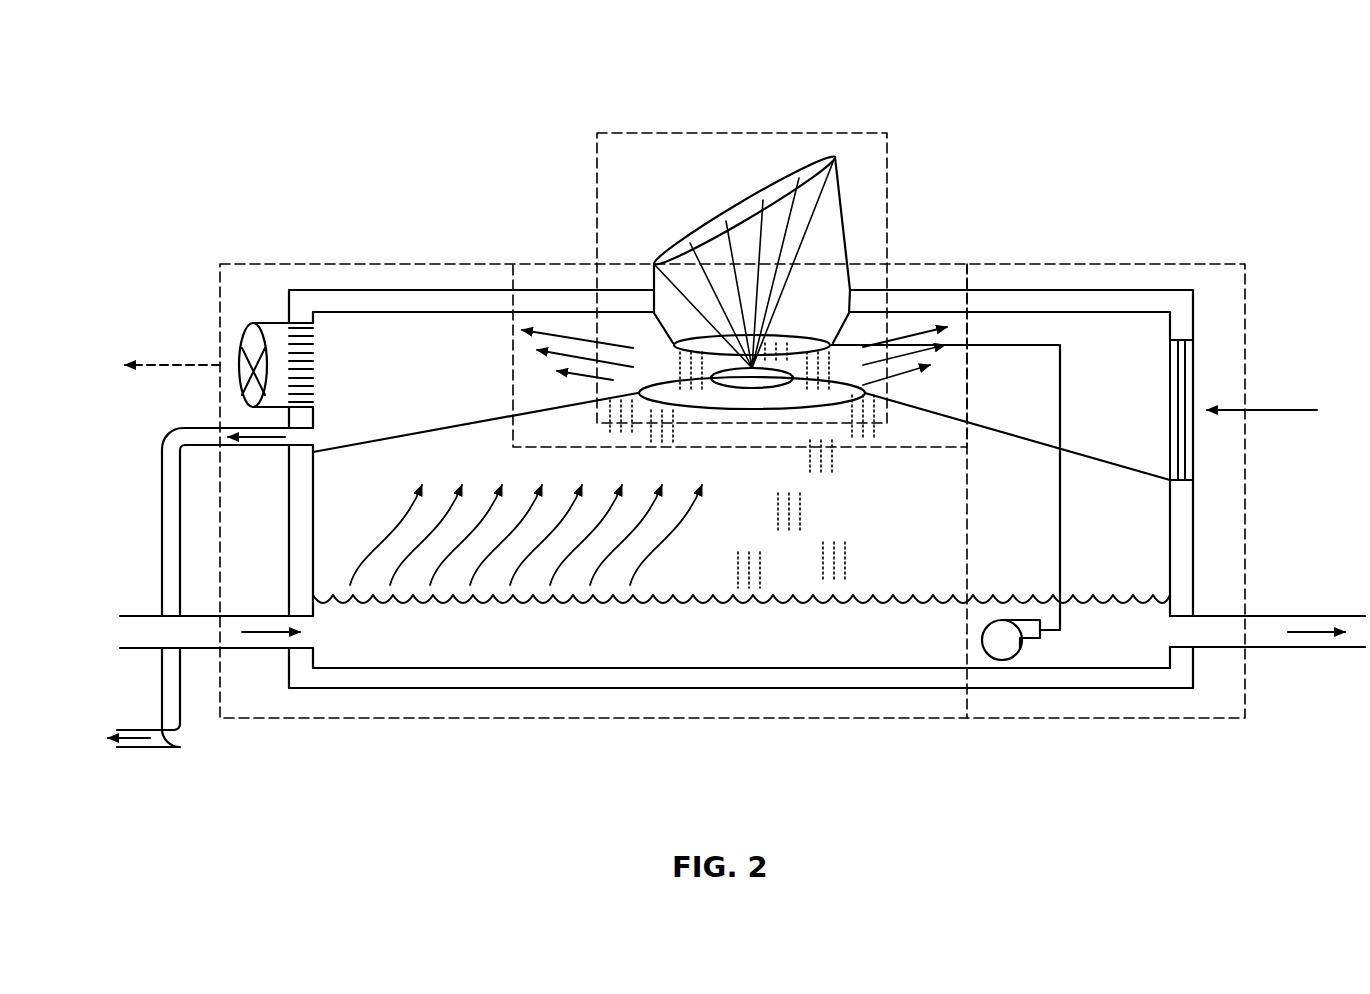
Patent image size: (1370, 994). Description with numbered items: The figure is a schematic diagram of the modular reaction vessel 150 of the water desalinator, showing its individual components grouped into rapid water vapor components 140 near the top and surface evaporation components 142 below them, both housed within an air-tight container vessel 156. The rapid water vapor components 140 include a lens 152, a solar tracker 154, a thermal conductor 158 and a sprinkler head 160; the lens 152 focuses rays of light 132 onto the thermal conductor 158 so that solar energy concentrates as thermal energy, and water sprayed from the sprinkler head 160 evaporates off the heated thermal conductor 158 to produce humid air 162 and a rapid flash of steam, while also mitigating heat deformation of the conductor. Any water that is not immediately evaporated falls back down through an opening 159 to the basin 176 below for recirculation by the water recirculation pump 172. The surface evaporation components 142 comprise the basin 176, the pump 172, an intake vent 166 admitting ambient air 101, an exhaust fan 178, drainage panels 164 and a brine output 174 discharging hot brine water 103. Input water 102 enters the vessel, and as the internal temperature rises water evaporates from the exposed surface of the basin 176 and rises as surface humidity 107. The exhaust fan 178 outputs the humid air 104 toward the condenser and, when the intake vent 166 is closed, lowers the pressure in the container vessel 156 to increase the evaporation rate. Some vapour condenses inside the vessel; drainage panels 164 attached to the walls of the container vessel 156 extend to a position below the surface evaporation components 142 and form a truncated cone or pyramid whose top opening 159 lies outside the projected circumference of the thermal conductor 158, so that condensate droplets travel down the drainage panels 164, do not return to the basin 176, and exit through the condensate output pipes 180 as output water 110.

The ambient air 101 is at (1287, 412).
The input water 102 is at (262, 615).
The hot brine water 103 is at (1312, 635).
The humid air 104 is at (160, 364).
The surface humidity 107 is at (378, 540).
The output water 110 is at (108, 736).
The rays of light 132 is at (812, 200).
The rapid water vapor components 140 is at (597, 208).
The surface evaporation components 142 is at (1080, 264).
The reaction vessel 150 is at (268, 116).
The lens 152 is at (722, 213).
The solar tracker 154 is at (572, 338).
The container vessel 156 is at (948, 290).
The thermal conductor 158 is at (775, 388).
The opening 159 is at (757, 410).
The sprinkler head 160 is at (800, 340).
The humid air 162 is at (1018, 348).
The drainage panels 164 is at (403, 433).
The intake vent 166 is at (1195, 365).
The water recirculation pump 172 is at (982, 640).
The brine output 174 is at (1300, 614).
The basin 176 is at (741, 623).
The exhaust fan 178 is at (313, 345).
The condensate output pipes 180 is at (160, 475).